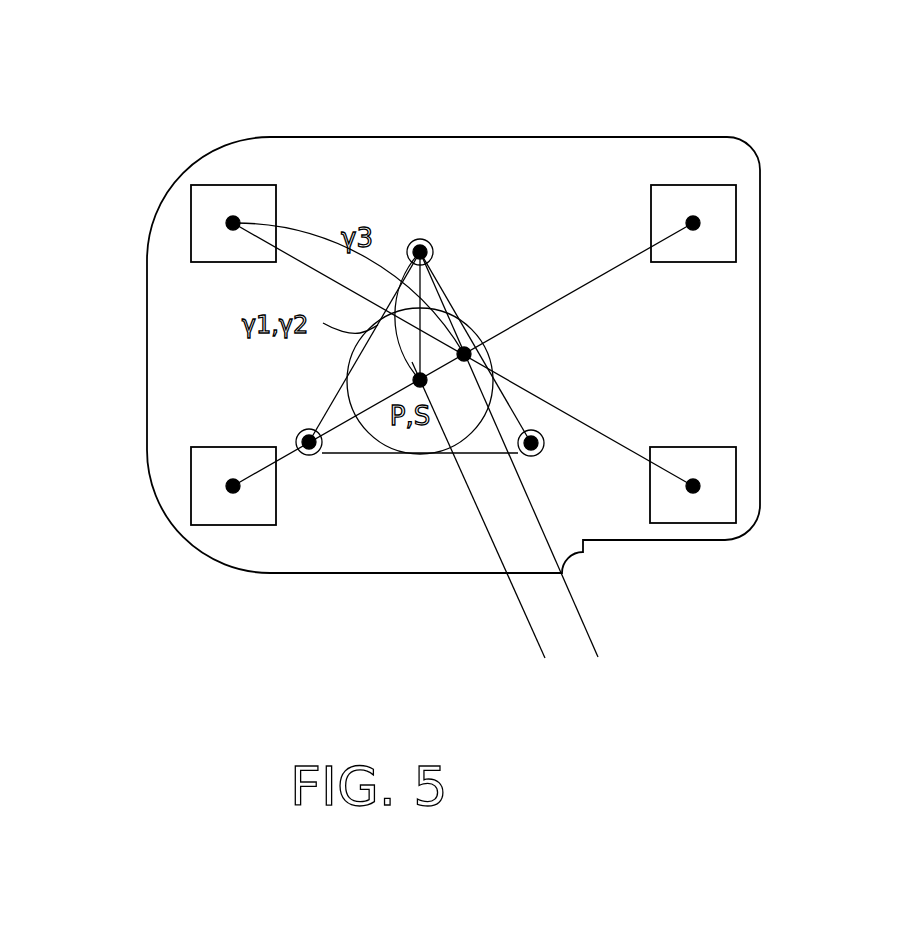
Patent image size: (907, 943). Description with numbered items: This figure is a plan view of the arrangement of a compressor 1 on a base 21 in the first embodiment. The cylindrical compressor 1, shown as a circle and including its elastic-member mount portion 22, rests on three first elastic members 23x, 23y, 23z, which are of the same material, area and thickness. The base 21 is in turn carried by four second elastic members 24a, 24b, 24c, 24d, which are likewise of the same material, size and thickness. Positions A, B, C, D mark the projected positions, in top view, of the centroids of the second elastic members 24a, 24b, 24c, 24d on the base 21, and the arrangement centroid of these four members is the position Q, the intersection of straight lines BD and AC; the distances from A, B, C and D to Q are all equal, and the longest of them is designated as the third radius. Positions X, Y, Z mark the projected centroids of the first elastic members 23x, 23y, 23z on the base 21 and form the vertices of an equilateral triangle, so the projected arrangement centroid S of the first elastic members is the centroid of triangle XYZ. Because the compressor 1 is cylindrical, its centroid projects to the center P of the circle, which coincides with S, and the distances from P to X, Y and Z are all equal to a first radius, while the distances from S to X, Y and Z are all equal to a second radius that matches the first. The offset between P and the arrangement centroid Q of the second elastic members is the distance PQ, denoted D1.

The compressor 1 is at (428, 443).
The base 21 is at (760, 345).
The elastic-member mount portion 22 is at (336, 392).
The first elastic member 23x is at (411, 243).
The first elastic member 23y is at (326, 446).
The first elastic member 23z is at (543, 450).
The second elastic member 24a is at (233, 185).
The second elastic member 24b is at (233, 525).
The second elastic member 24c is at (693, 523).
The second elastic member 24d is at (692, 185).
The projected centroid position of second elastic member 24a A is at (226, 223).
The projected centroid position of second elastic member 24b B is at (226, 487).
The projected centroid position of second elastic member 24c C is at (700, 486).
The projected centroid position of second elastic member 24d D is at (700, 223).
The projected centroid position of first elastic member 23x X is at (430, 246).
The projected centroid position of first elastic member 23y Y is at (315, 455).
The projected centroid position of first elastic member 23z Z is at (543, 436).
The arrangement centroid of the second elastic members Q is at (470, 348).
The distance PQ D1 is at (493, 663).